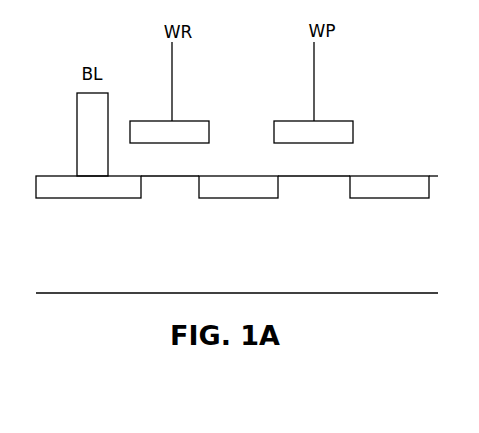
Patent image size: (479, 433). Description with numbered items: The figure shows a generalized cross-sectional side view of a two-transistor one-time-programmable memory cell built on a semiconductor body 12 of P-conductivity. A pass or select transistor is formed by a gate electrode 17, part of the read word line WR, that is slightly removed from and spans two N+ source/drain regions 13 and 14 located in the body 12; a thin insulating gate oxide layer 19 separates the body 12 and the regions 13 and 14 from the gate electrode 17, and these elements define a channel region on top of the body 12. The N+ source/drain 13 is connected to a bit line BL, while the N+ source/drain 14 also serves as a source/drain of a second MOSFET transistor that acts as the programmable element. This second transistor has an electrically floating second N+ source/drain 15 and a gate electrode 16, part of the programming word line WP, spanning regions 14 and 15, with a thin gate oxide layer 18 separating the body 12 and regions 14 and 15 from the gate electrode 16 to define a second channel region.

The semiconductor body 12 is at (237, 279).
The N+ source/drain region 13 is at (88, 203).
The N+ source/drain region 14 is at (238, 203).
The second N+ source/drain 15 is at (389, 204).
The gate electrode 16 is at (313, 132).
The gate electrode 17 is at (169, 132).
The gate oxide layer 18 is at (358, 163).
The gate oxide layer 19 is at (170, 163).